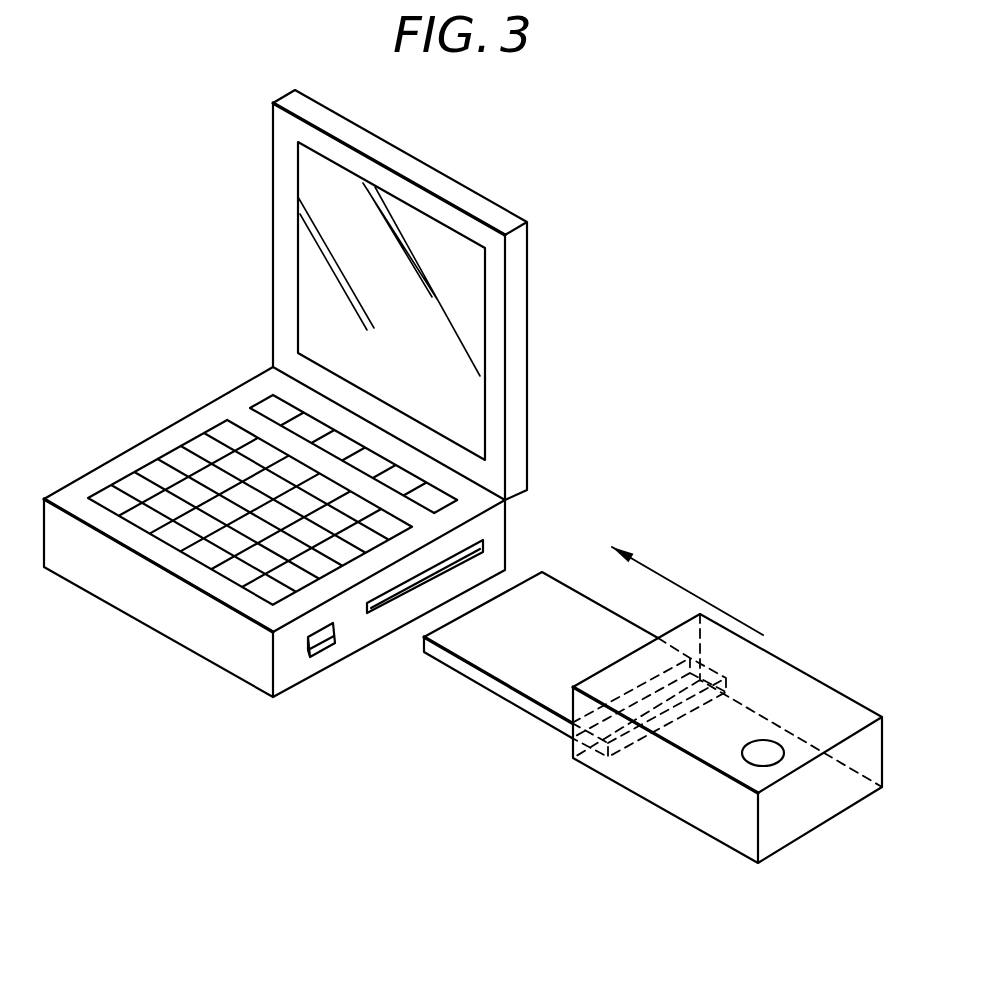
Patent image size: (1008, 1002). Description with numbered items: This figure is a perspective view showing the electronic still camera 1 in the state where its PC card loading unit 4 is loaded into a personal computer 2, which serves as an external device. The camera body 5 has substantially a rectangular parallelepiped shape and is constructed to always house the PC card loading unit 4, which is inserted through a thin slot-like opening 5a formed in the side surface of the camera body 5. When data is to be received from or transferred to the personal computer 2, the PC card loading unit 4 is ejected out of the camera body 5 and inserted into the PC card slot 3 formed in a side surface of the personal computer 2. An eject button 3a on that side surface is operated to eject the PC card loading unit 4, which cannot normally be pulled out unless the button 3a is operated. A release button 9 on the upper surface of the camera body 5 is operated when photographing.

The electronic still camera 1 is at (668, 684).
The personal computer 2 is at (305, 187).
The PC card slot 3 is at (465, 555).
The eject button 3a is at (330, 640).
The PC card loading unit 4 is at (512, 672).
The camera body 5 is at (833, 702).
The opening 5a is at (570, 737).
The release button 9 is at (770, 753).